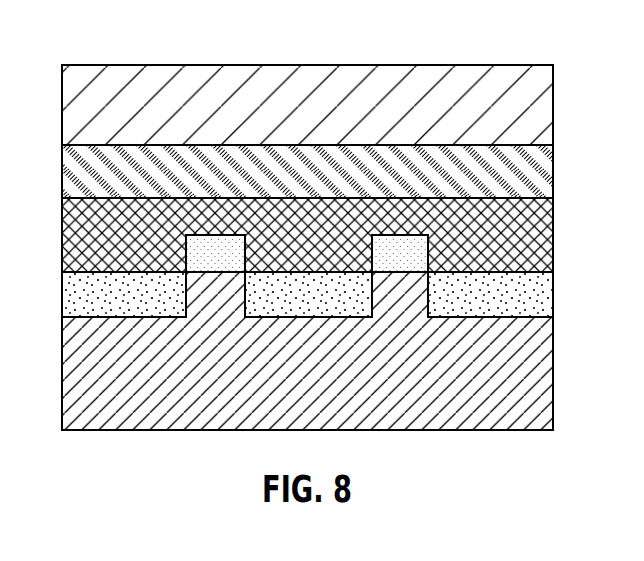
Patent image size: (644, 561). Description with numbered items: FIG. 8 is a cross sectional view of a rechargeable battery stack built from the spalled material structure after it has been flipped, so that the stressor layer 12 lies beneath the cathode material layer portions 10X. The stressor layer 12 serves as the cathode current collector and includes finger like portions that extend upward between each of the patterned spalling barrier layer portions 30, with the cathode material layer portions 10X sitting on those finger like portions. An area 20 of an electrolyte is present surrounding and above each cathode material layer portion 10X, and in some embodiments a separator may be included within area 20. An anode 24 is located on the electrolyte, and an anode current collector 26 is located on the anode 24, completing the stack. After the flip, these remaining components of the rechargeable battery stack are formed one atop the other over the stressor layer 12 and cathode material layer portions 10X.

The cathode material layer portions 10X is at (219, 246).
The stressor layer 12 is at (297, 382).
The area of an electrolyte 20 is at (297, 247).
The anode 24 is at (297, 184).
The anode current collector 26 is at (297, 116).
The patterned spalling barrier layer portions 30 is at (139, 307).